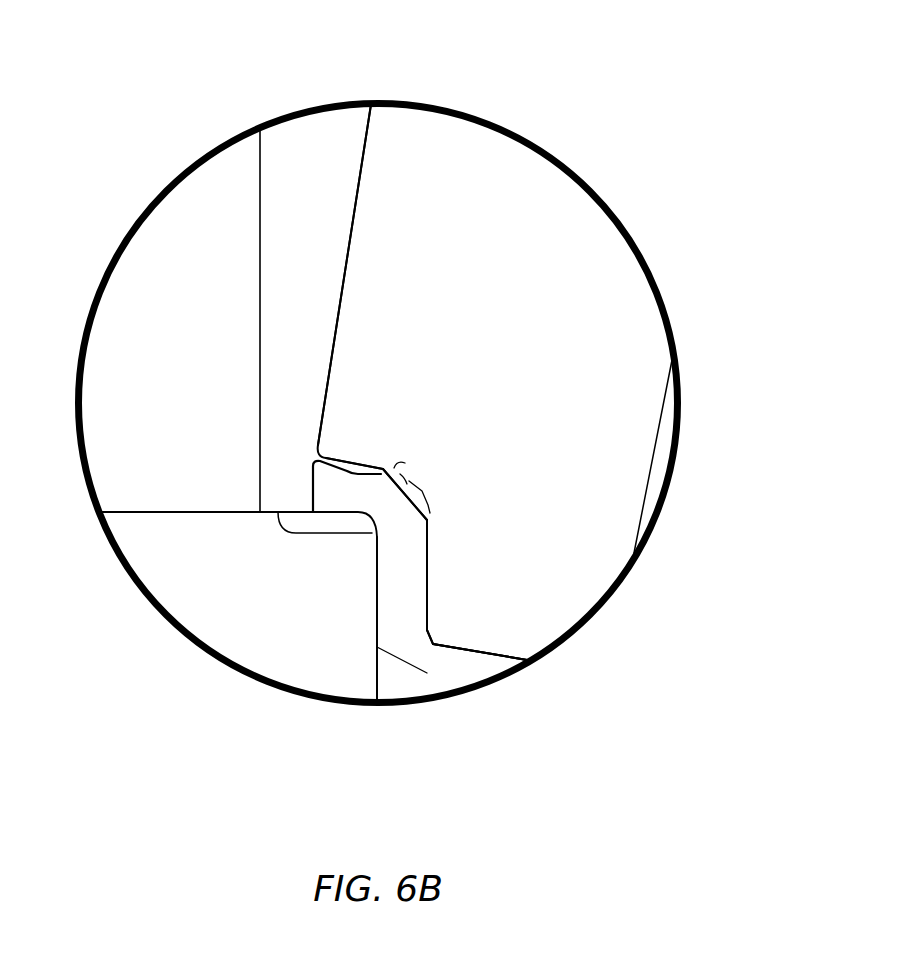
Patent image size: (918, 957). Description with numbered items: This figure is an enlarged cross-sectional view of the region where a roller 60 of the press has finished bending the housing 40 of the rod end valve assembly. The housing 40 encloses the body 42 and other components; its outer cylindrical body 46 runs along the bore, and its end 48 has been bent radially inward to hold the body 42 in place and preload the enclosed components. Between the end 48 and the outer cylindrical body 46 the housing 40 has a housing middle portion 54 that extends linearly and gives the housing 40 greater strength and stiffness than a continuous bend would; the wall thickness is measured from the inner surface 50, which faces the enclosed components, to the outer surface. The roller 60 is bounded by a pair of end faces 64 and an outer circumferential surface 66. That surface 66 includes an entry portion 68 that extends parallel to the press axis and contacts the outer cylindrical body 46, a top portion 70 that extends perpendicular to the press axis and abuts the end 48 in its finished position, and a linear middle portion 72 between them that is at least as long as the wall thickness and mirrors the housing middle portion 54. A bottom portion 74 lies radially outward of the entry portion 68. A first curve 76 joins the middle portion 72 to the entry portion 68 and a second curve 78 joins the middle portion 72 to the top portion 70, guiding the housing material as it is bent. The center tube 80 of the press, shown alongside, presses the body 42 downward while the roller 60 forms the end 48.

The housing 40 is at (410, 675).
The body 42 is at (255, 638).
The outer cylindrical body 46 is at (397, 688).
The end 48 is at (312, 488).
The inner surface 50 is at (337, 513).
The housing middle portion 54 is at (407, 478).
The roller 60 is at (543, 208).
The end faces 64 is at (357, 177).
The outer circumferential surface 66 is at (447, 583).
The entry portion 68 is at (427, 523).
The top portion 70 is at (354, 485).
The middle portion 72 is at (417, 489).
The bottom portion 74 is at (513, 663).
The first curve 76 is at (427, 520).
The second curve 78 is at (397, 462).
The center tube 80 is at (158, 258).